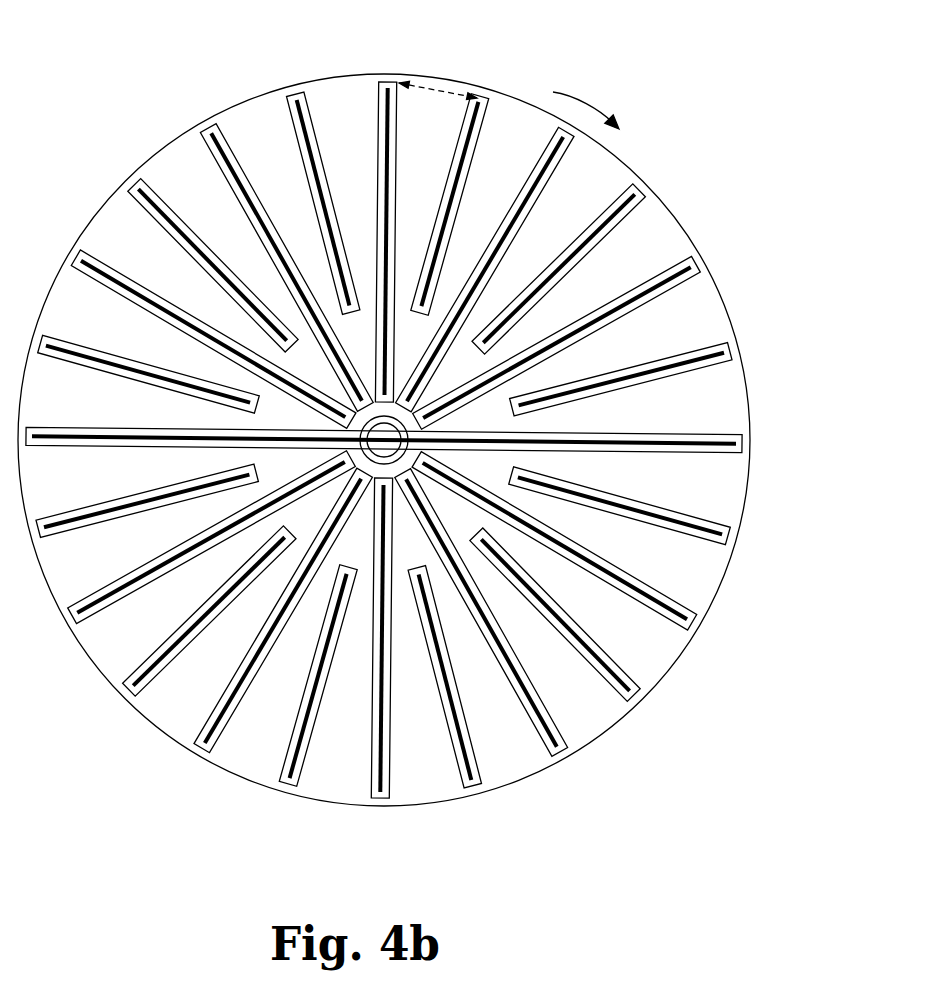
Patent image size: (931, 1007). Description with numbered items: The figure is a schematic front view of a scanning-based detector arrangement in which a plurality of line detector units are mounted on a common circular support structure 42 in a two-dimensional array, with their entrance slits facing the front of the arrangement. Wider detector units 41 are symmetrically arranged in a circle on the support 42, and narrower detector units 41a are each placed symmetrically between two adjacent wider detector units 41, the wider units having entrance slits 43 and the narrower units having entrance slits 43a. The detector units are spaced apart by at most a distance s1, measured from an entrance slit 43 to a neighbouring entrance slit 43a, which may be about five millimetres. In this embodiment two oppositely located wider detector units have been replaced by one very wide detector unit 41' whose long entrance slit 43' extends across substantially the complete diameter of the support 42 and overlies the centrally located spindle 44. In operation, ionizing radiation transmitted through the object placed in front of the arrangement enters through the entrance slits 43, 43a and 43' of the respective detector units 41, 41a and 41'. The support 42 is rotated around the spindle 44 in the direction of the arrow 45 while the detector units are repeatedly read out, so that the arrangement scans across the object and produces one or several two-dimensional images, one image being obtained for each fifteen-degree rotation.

The wider line detector unit 41 is at (282, 230).
The narrower line detector unit 41a is at (305, 93).
The very wide detector unit 41' is at (411, 397).
The circular support structure 42 is at (123, 244).
The entrance slit 43 is at (247, 219).
The entrance slit 43a is at (297, 106).
The long entrance slit 43' is at (384, 408).
The spindle 44 is at (406, 416).
The arrow 45 is at (568, 93).
The maximum spacing between detector units s1 is at (438, 103).